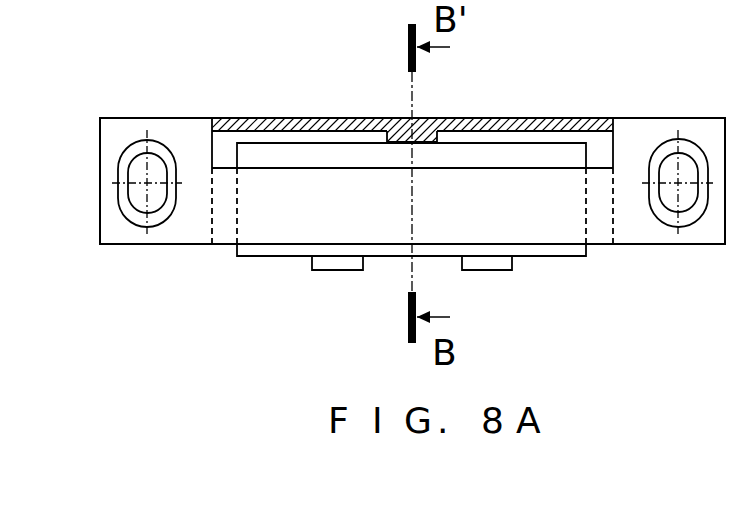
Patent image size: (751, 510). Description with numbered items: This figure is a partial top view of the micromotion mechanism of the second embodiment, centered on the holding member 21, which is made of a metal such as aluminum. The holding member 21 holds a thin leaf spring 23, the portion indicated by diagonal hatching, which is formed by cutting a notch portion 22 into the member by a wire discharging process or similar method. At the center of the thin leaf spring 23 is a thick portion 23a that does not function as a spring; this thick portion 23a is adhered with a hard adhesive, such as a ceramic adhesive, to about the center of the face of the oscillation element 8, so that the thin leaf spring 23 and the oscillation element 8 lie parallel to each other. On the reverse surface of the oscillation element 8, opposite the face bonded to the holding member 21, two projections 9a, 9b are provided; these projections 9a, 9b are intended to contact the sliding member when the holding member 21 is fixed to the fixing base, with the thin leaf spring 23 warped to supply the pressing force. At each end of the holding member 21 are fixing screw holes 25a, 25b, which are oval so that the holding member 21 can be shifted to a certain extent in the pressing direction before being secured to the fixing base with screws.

The holding member 21 is at (192, 133).
The notch portion 22 is at (218, 163).
The thin leaf spring 23 is at (263, 120).
The thick portion 23a is at (395, 118).
The oscillation element 8 is at (237, 256).
The projection 9a is at (498, 272).
The projection 9b is at (332, 272).
The fixing screw hole 25a is at (133, 155).
The fixing screw hole 25b is at (688, 155).